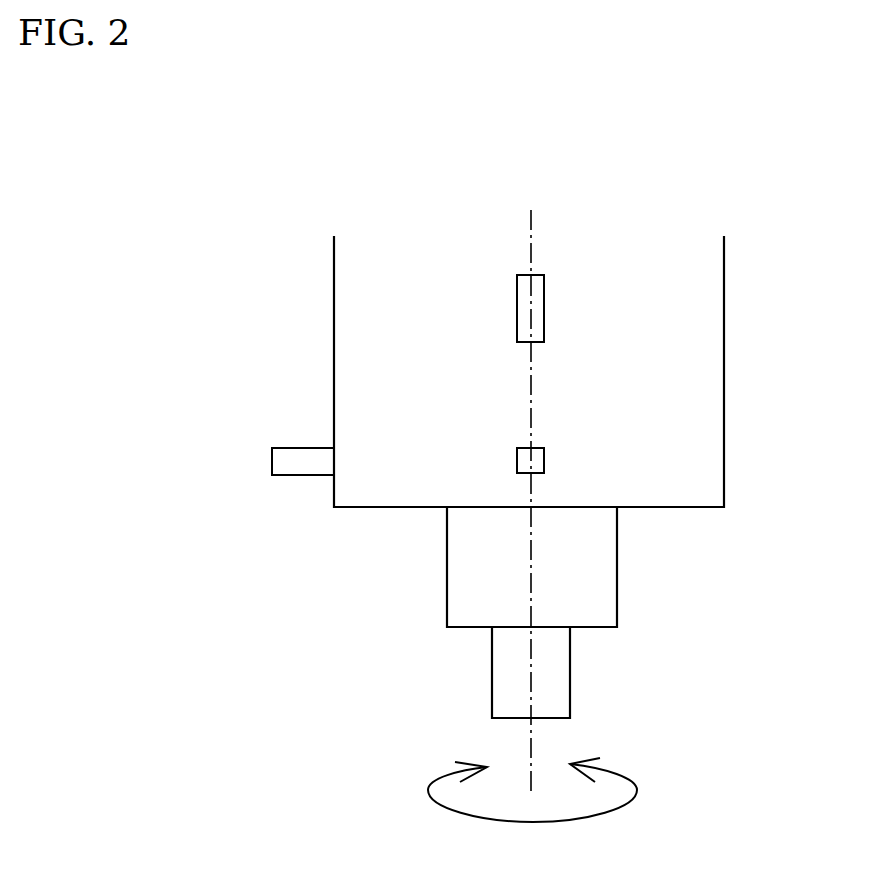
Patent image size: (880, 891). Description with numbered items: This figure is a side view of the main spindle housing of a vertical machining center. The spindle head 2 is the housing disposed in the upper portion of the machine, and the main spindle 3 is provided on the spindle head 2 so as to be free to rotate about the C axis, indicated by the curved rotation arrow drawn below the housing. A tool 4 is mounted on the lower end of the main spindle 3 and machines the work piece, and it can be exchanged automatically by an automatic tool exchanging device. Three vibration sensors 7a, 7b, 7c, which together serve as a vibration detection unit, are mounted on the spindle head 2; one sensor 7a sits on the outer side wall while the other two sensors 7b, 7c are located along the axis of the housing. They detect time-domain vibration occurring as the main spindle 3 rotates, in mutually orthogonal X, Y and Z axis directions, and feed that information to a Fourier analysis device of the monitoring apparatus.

The spindle head 2 is at (353, 372).
The main spindle 3 is at (462, 572).
The tool 4 is at (507, 677).
The vibration sensor 7a is at (278, 460).
The vibration sensor 7b is at (540, 455).
The vibration sensor 7c is at (538, 312).
The C axis C is at (532, 812).